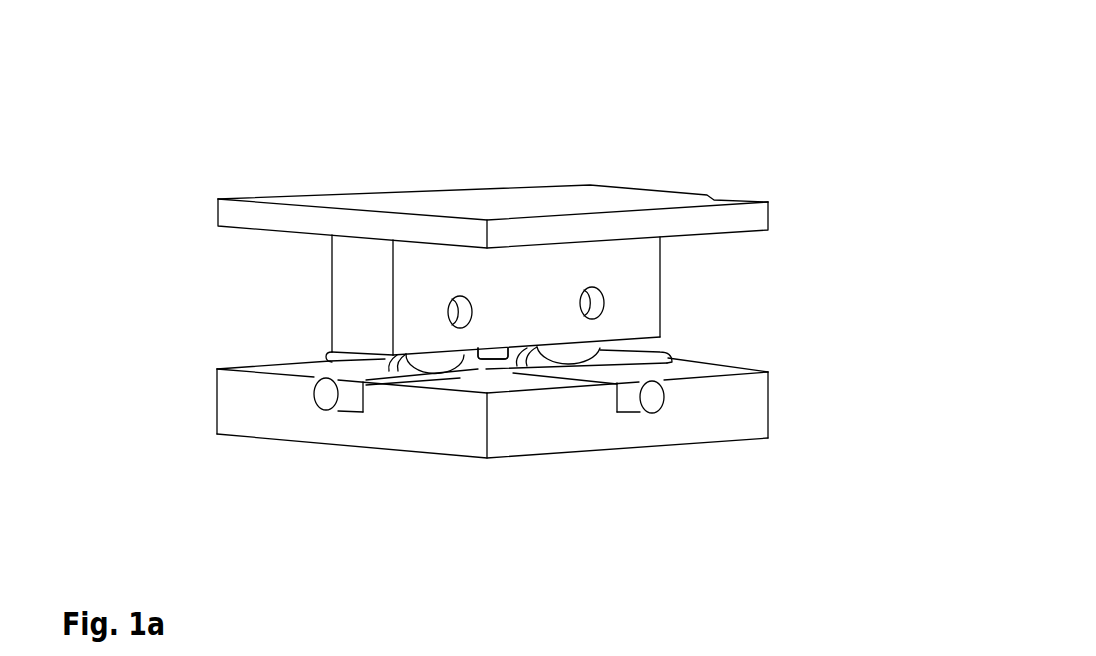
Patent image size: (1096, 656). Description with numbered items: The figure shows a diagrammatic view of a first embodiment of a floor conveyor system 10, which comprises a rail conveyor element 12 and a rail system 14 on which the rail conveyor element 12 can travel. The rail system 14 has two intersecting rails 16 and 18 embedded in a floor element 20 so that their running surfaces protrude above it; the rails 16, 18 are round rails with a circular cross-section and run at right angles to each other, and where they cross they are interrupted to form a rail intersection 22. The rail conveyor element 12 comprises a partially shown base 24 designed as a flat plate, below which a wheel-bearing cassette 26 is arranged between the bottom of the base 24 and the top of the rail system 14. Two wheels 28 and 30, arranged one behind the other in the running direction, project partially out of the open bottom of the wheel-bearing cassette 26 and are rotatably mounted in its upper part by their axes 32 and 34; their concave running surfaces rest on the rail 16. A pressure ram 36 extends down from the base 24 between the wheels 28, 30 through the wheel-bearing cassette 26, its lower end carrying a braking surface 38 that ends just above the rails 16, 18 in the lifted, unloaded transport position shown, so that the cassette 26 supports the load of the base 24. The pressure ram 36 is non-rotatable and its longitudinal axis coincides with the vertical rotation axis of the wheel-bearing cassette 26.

The floor conveyor system 10 is at (832, 67).
The rail conveyor element 12 is at (774, 263).
The rail system 14 is at (160, 390).
The rail 16 is at (326, 396).
The rail 18 is at (325, 354).
The floor element 20 is at (587, 432).
The rail intersection 22 is at (472, 368).
The base 24 is at (405, 200).
The wheel-bearing cassette 26 is at (353, 252).
The wheel 28 is at (592, 354).
The wheel 30 is at (440, 372).
The axis 32 is at (606, 303).
The axis 34 is at (447, 306).
The pressure ram 36 is at (503, 358).
The braking surface 38 is at (497, 359).